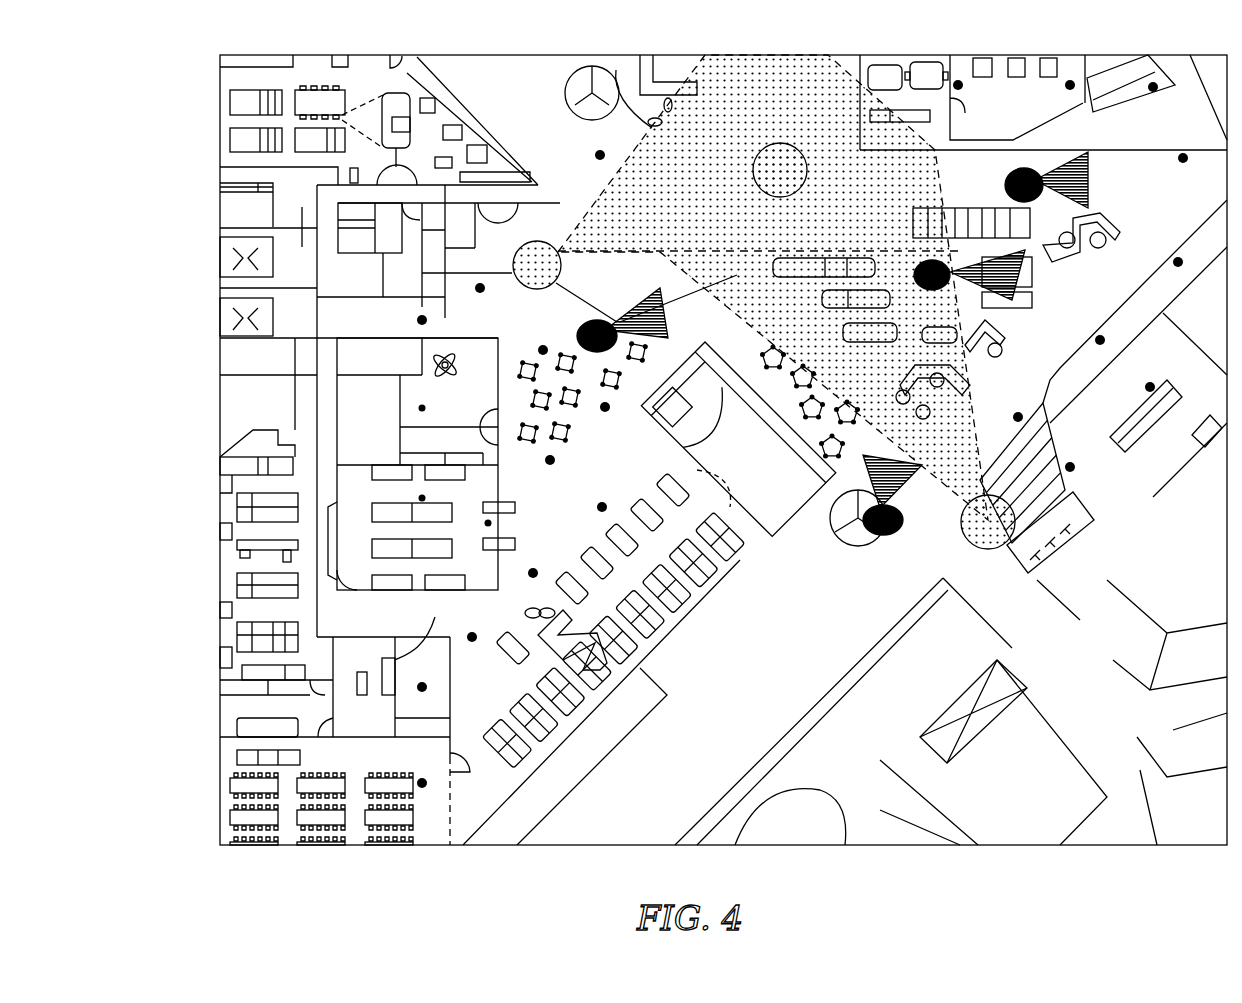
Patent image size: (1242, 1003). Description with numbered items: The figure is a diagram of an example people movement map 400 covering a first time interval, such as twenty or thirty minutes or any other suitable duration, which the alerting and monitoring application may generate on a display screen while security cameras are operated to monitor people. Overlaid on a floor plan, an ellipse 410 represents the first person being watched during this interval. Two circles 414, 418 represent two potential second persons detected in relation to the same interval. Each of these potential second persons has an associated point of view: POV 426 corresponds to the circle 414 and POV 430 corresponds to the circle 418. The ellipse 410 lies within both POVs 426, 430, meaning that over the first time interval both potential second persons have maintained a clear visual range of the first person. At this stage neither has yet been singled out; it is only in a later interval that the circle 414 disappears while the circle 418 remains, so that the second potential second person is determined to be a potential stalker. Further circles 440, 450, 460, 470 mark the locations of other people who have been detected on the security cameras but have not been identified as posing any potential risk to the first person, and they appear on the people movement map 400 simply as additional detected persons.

The people movement map 400 is at (97, 35).
The ellipse 410 is at (778, 143).
The circle 414 is at (543, 241).
The circle 418 is at (961, 533).
The POV 426 is at (616, 70).
The POV 430 is at (942, 177).
The circle 440 is at (1026, 168).
The circle 450 is at (936, 292).
The circle 460 is at (880, 536).
The circle 470 is at (596, 352).